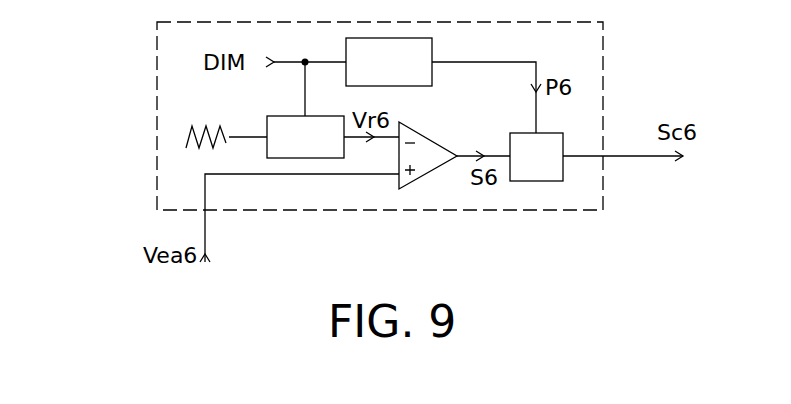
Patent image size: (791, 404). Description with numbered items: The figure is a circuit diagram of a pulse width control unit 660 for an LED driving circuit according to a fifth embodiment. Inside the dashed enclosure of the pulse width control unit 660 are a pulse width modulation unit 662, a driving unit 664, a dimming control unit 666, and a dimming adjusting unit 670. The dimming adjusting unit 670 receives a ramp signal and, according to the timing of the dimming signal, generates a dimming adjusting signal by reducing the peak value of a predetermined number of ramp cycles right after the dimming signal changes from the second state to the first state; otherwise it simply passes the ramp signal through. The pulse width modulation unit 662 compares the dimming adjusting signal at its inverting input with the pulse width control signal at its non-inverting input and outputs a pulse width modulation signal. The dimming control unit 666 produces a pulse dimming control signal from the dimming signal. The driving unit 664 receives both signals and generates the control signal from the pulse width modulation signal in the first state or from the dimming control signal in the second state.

The pulse width control unit 660 is at (167, 63).
The pulse width modulation unit 662 is at (444, 149).
The driving unit 664 is at (556, 170).
The dimming control unit 666 is at (408, 74).
The dimming adjusting unit 670 is at (324, 151).